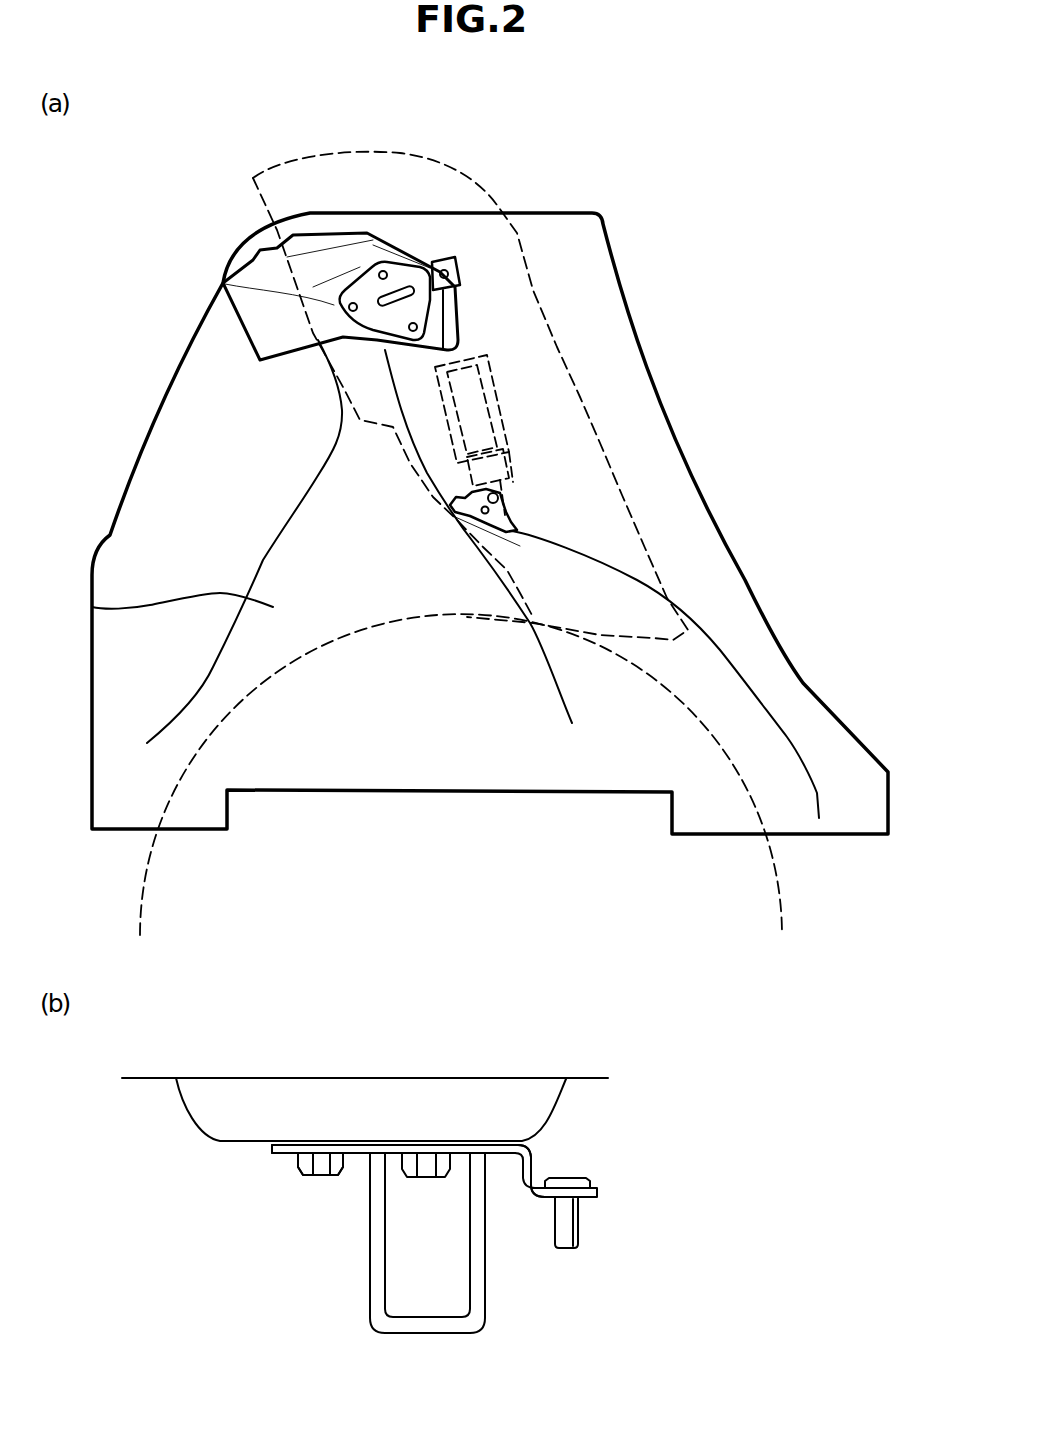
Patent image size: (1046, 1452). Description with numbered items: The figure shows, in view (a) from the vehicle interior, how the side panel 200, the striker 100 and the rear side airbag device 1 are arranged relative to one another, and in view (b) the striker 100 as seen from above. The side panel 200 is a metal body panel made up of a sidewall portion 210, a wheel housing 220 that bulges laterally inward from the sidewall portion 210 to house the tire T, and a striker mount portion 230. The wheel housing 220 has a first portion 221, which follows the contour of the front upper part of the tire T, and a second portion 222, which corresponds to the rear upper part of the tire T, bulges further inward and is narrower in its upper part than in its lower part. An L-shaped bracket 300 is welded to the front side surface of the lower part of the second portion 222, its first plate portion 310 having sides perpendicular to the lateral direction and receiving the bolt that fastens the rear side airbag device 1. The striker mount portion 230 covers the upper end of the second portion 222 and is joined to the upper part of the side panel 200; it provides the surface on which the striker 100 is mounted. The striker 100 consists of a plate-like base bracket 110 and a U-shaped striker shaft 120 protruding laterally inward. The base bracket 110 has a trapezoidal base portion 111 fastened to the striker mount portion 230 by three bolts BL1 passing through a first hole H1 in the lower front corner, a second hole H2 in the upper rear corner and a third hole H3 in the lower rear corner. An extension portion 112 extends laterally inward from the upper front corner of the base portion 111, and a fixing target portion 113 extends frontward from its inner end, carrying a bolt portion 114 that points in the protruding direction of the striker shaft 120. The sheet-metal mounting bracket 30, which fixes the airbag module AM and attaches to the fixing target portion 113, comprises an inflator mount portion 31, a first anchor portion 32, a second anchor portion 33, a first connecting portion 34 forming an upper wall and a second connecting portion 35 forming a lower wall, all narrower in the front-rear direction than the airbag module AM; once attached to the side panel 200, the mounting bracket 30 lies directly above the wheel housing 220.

The rear side airbag device 1 is at (555, 315).
The side panel 200 is at (555, 214).
The sidewall portion 210 is at (618, 403).
The wheel housing 220 is at (705, 635).
The first portion 221 is at (735, 717).
The second portion 222 is at (92, 607).
The striker mount portion 230 is at (249, 259).
The striker 100 is at (341, 304).
The base bracket 110 is at (369, 282).
The base portion 111 is at (360, 1152).
The extension portion 112 is at (525, 1170).
The fixing target portion 113 is at (467, 278).
The bolt portion 114 is at (572, 1232).
The striker shaft 120 is at (405, 290).
The mounting bracket 30 is at (506, 466).
The inflator mount portion 31 is at (443, 407).
The first anchor portion 32 is at (457, 268).
The second anchor portion 33 is at (450, 511).
The first connecting portion 34 is at (467, 293).
The second connecting portion 35 is at (470, 478).
The L-shaped bracket 300 is at (509, 531).
The first plate portion 310 is at (513, 517).
The airbag module AM is at (497, 392).
The first hole H1 is at (447, 267).
The second hole H2 is at (383, 269).
The third hole H3 is at (222, 283).
The bolt BL1 is at (303, 1166).
The tire T is at (777, 888).